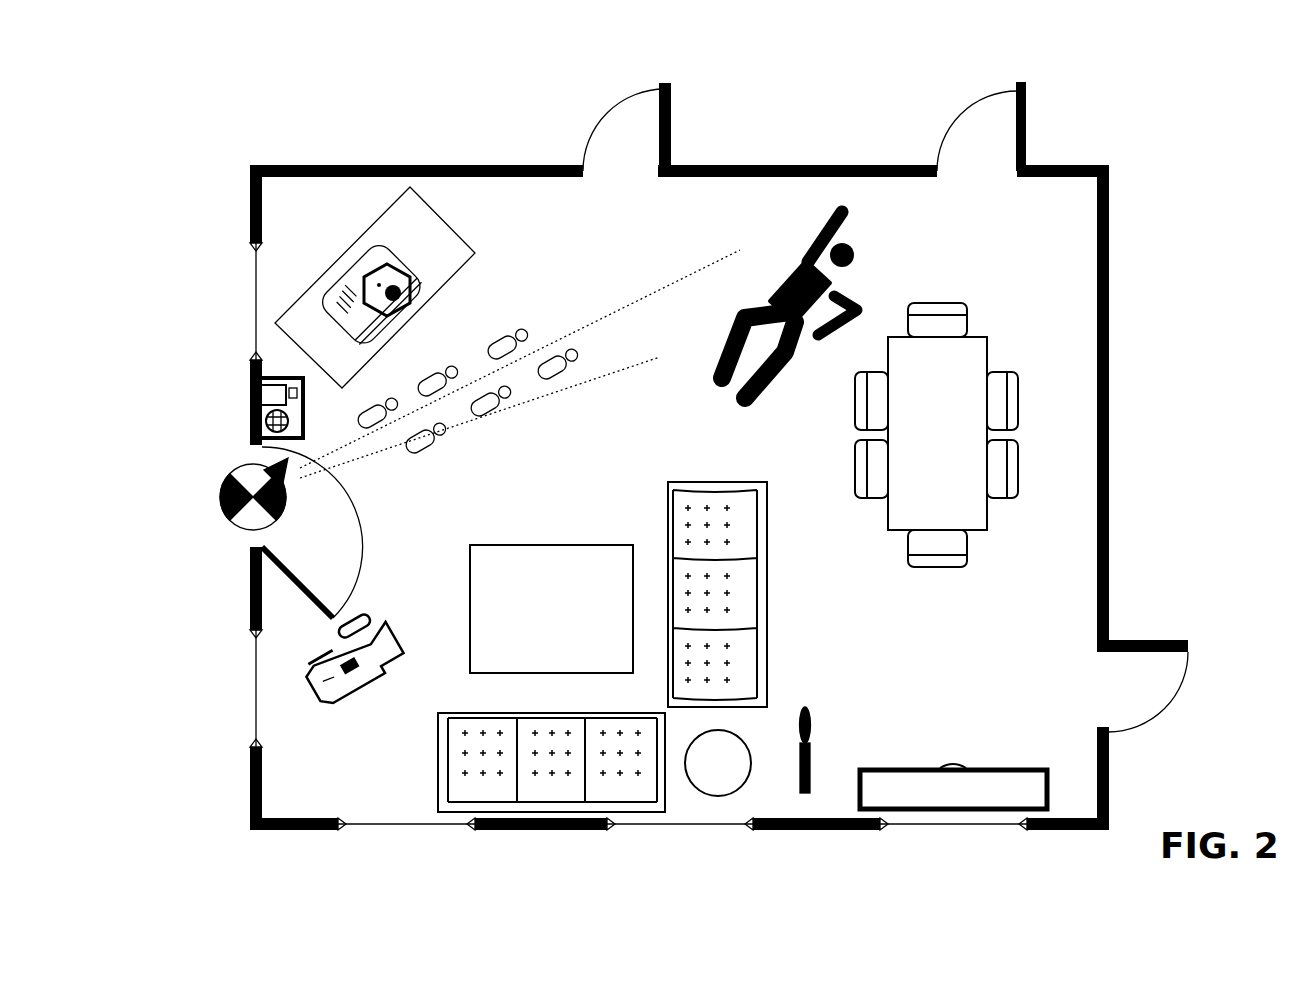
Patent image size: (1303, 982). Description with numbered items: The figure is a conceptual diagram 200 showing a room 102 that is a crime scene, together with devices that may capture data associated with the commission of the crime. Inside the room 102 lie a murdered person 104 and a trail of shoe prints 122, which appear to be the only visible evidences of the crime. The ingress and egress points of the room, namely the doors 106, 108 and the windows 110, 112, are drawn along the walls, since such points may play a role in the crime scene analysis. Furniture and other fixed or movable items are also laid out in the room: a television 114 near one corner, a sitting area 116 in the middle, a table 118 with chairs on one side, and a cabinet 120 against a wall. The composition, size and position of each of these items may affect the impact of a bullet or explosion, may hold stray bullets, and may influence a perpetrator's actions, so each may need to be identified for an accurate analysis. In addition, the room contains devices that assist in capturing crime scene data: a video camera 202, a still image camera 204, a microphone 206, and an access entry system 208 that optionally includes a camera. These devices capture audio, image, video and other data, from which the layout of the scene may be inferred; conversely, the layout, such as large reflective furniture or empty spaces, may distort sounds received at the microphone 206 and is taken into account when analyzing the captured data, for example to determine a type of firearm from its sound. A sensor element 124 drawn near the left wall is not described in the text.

The diagram 200 is at (1150, 86).
The room 102 is at (326, 138).
The murdered person 104 is at (783, 237).
The door 106 is at (579, 121).
The door 108 is at (929, 121).
The window 110 is at (422, 834).
The window 112 is at (686, 834).
The television 114 is at (352, 216).
The sitting area 116 is at (594, 499).
The table 118 is at (992, 317).
The cabinet 120 is at (958, 744).
The shoe prints 122 is at (551, 311).
The sensor 124 is at (223, 524).
The video camera 202 is at (374, 614).
The still image camera 204 is at (411, 249).
The microphone 206 is at (818, 714).
The access entry system 208 is at (255, 379).